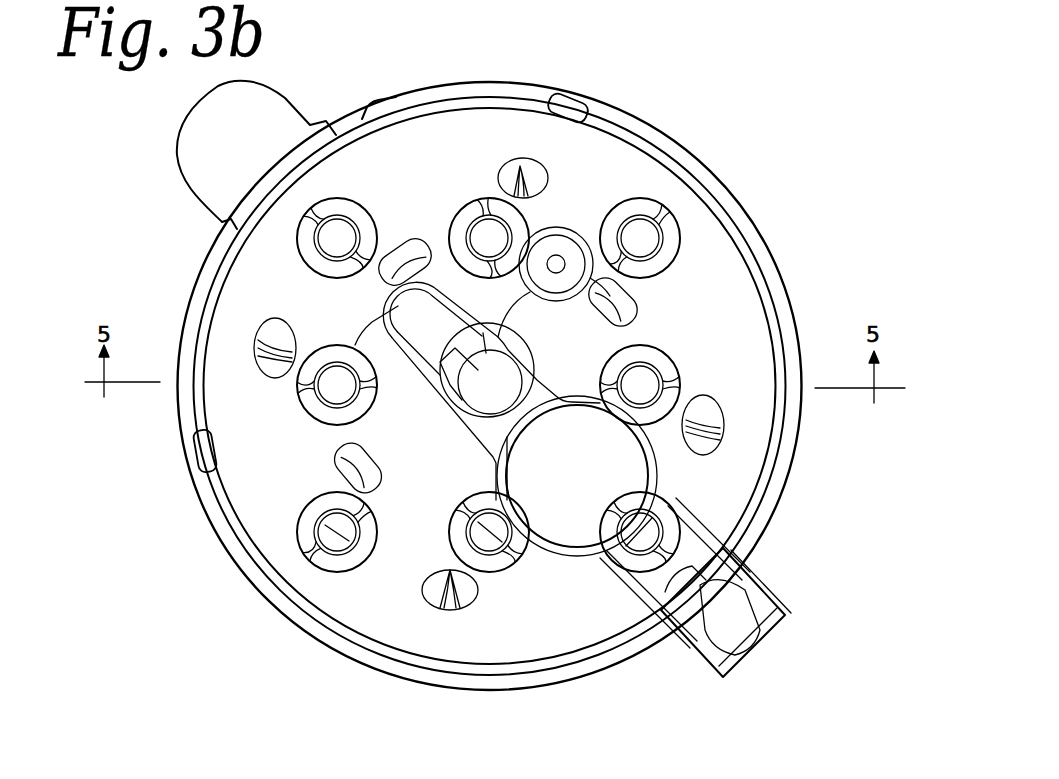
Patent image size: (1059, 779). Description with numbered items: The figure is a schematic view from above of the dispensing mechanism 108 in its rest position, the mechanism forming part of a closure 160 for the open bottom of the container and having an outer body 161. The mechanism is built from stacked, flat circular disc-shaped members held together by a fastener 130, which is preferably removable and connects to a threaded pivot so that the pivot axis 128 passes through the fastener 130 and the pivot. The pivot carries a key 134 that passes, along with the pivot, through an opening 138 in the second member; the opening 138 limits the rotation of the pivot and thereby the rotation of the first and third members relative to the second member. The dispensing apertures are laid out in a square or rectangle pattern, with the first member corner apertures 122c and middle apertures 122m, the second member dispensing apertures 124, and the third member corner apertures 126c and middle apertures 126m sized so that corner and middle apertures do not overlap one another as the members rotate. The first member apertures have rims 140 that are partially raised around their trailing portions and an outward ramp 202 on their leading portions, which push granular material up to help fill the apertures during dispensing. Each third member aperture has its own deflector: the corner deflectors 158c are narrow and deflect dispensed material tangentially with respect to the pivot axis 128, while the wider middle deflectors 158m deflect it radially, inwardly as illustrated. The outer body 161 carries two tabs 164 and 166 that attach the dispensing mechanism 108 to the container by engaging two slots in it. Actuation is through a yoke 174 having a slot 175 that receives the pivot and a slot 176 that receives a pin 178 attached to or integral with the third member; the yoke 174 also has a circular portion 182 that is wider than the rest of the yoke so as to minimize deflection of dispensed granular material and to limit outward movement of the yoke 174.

The dispensing mechanism 108 is at (795, 209).
The corner dispensing apertures of the first member 122c is at (345, 233).
The middle dispensing apertures of the first member 122m is at (490, 242).
The second member dispensing apertures 124 is at (660, 253).
The corner dispensing apertures of the third member 126c is at (686, 421).
The middle dispensing apertures of the third member 126m is at (650, 331).
The pivot axis 128 is at (480, 416).
The fastener 130 is at (508, 381).
The key 134 is at (448, 396).
The opening 138 is at (470, 357).
The rim 140 is at (660, 253).
The corner deflectors 158c is at (518, 176).
The middle deflectors 158m is at (630, 297).
The closure 160 is at (692, 130).
The outer body 161 is at (668, 49).
The tab 164 is at (722, 563).
The tab 166 is at (312, 130).
The yoke 174 is at (520, 303).
The slot 175 is at (338, 343).
The slot 176 is at (562, 240).
The pin 178 is at (562, 287).
The circular portion 182 is at (652, 454).
The ramp 202 is at (648, 230).